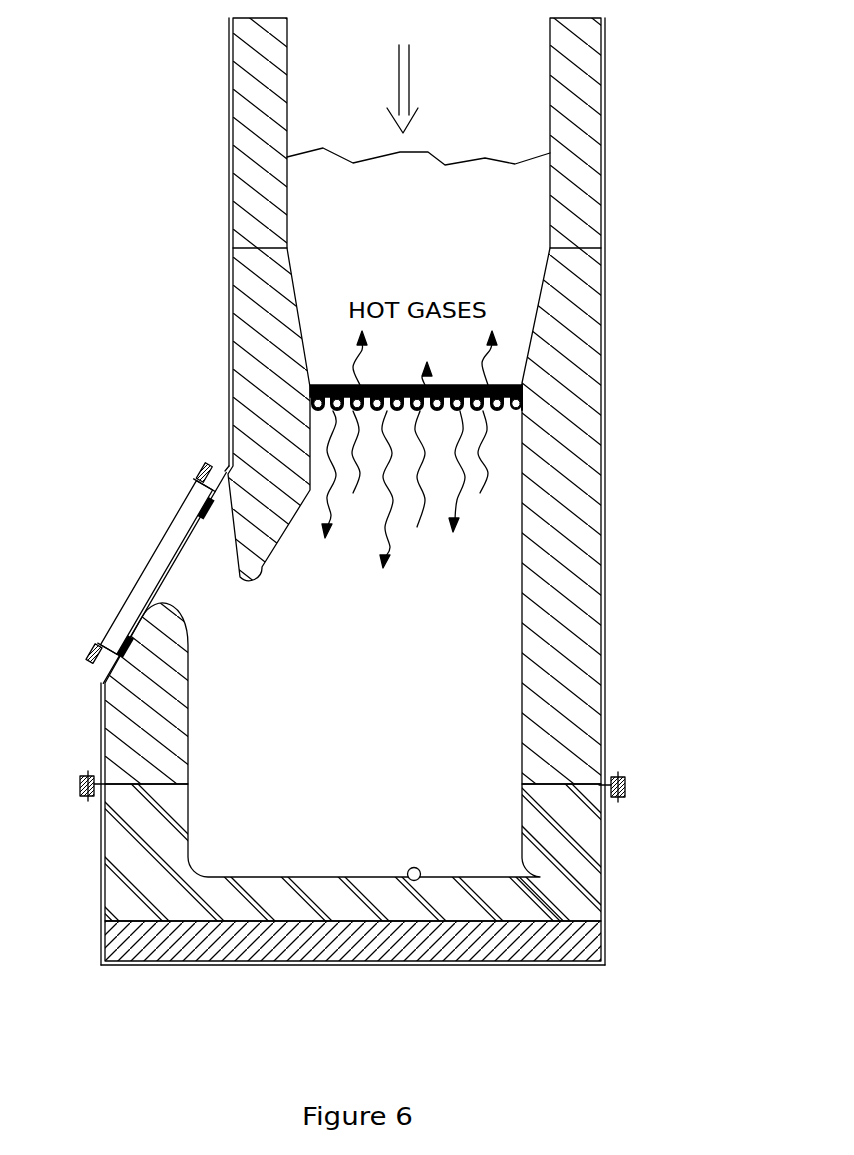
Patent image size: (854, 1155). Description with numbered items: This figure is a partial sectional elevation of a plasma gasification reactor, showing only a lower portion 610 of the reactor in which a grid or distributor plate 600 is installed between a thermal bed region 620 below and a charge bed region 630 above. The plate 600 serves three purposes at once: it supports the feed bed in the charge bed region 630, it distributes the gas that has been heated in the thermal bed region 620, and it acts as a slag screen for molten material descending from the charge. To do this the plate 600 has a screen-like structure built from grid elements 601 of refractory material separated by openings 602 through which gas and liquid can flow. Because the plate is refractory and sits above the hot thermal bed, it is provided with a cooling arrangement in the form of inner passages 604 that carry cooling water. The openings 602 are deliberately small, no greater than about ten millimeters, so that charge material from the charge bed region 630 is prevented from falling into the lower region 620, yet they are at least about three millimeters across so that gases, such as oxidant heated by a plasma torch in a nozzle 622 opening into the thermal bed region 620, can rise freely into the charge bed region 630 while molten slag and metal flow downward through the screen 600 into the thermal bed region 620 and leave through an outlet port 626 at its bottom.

The grid or distributor plate 600 is at (521, 342).
The grid elements 601 is at (510, 385).
The openings 602 is at (515, 413).
The inner passages 604 is at (525, 397).
The lower portion 610 is at (631, 491).
The thermal bed region 620 is at (503, 622).
The nozzle 622 is at (120, 512).
The outlet port 626 is at (562, 839).
The charge bed region 630 is at (517, 155).